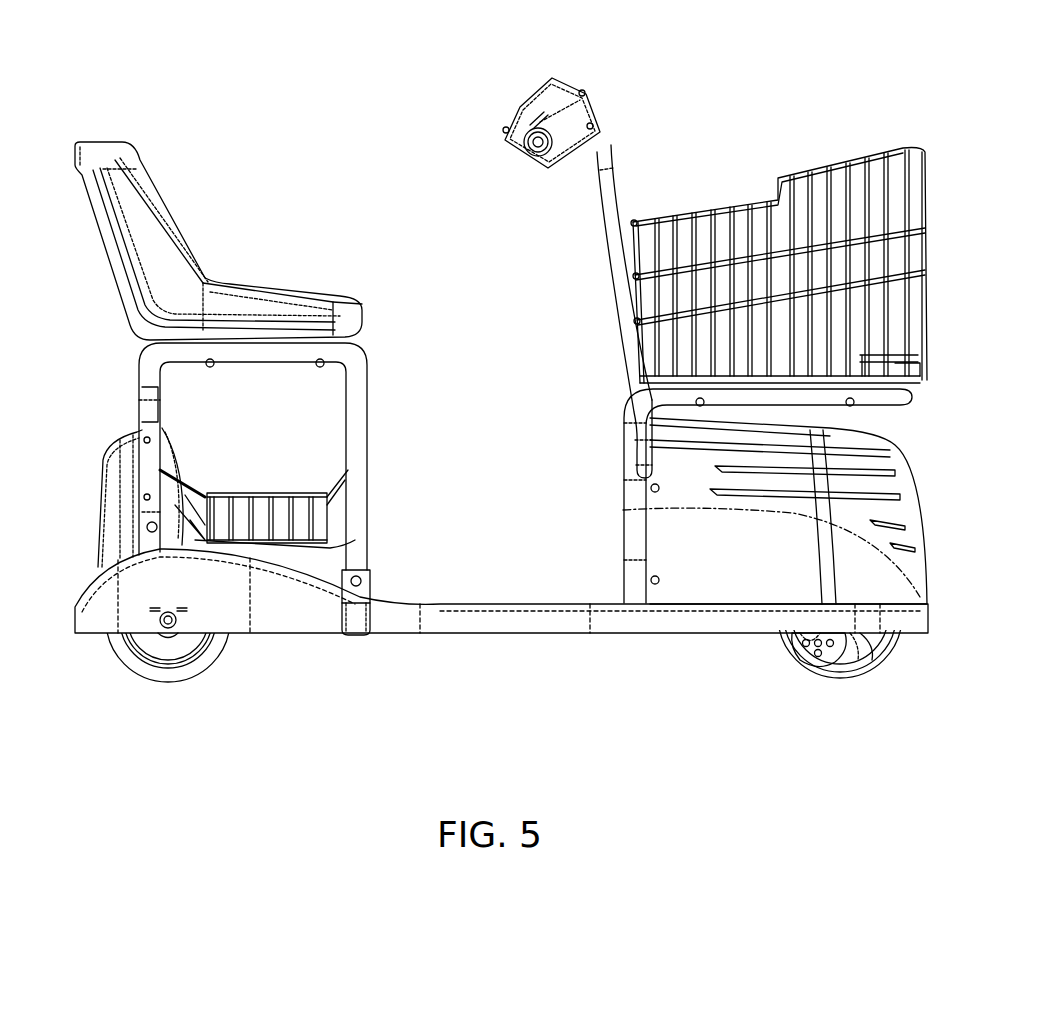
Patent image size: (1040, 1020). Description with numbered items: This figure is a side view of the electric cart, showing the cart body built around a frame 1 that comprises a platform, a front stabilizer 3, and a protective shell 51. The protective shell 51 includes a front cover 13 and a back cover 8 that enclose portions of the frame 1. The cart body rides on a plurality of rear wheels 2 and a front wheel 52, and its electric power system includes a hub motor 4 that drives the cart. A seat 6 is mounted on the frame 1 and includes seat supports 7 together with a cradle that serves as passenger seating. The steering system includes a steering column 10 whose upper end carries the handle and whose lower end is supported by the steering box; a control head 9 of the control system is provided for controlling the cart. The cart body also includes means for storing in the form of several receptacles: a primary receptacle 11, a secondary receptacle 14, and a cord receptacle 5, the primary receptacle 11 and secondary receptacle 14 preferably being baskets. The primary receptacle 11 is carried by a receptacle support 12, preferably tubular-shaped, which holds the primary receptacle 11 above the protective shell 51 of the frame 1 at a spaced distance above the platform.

The frame 1 is at (318, 634).
The rear wheels 2 is at (168, 686).
The front stabilizer 3 is at (782, 646).
The hub motor 4 is at (900, 642).
The cord receptacle 5 is at (107, 430).
The seat 6 is at (128, 141).
The seat supports 7 is at (370, 412).
The back cover 8 is at (624, 445).
The control head 9 is at (527, 104).
The steering column 10 is at (612, 146).
The primary receptacle 11 is at (851, 155).
The receptacle support 12 is at (875, 397).
The front cover 13 is at (900, 512).
The secondary receptacle 14 is at (262, 490).
The protective shell 51 is at (920, 560).
The front wheel 52 is at (833, 680).